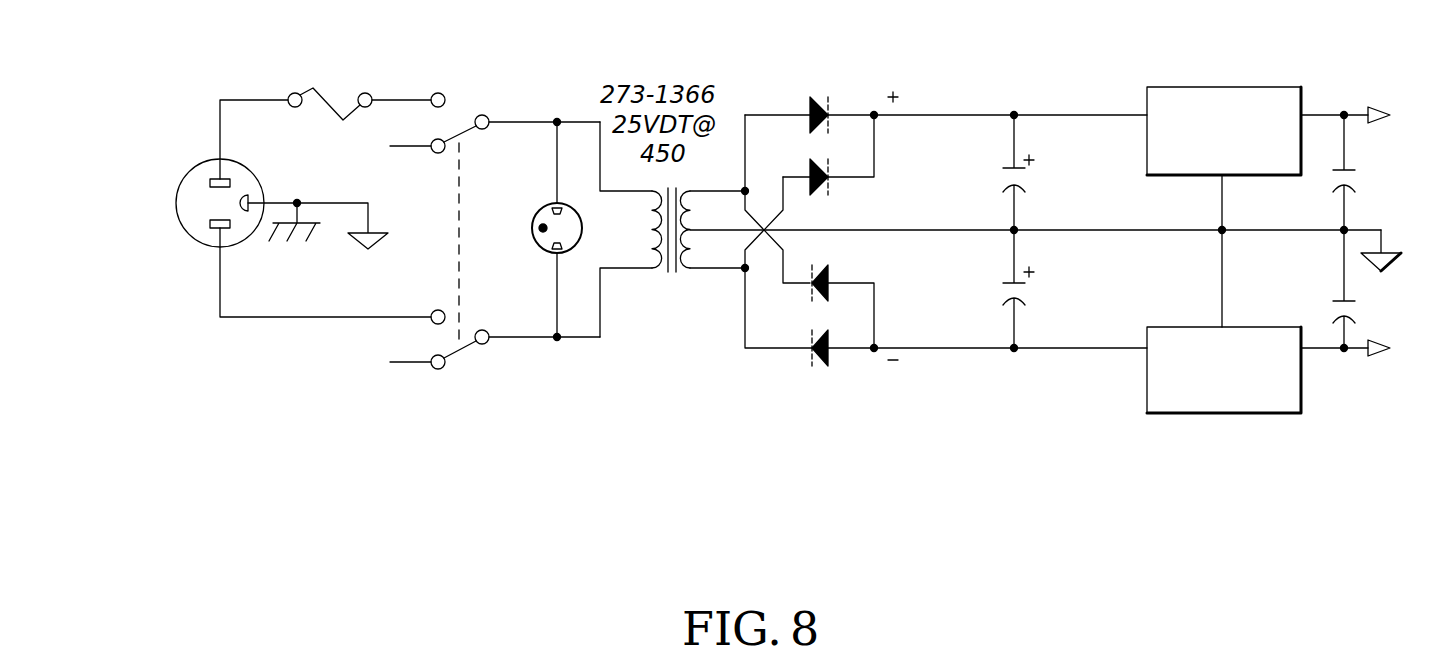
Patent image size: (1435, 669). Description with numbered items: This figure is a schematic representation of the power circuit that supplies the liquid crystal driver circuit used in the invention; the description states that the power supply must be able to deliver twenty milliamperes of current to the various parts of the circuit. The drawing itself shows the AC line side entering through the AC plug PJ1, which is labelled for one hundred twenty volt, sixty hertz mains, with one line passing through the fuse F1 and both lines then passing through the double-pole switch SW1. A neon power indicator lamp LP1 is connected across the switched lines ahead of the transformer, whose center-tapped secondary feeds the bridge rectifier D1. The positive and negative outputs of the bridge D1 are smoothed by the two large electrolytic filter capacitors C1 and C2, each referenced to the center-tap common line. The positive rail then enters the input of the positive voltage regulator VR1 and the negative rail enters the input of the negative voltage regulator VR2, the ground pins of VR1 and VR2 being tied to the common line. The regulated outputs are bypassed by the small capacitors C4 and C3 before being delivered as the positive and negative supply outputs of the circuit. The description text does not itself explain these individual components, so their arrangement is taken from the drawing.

The AC plug (120VAC 60Hz) PJ1 is at (252, 208).
The fuse 1/25B F1 is at (357, 73).
The DPDT power switch SW1 is at (495, 206).
The neon power lamp LP1 is at (524, 230).
The bridge rectifier WD2G9029 D1 is at (820, 183).
The 220uF filter capacitor C1 is at (975, 173).
The 220uF filter capacitor C2 is at (964, 291).
The 0.1uF capacitor C3 is at (1377, 289).
The 0.1uF capacitor C4 is at (1377, 172).
The 7812 positive voltage regulator VR1 is at (1257, 129).
The LM7912 negative voltage regulator VR2 is at (1256, 353).